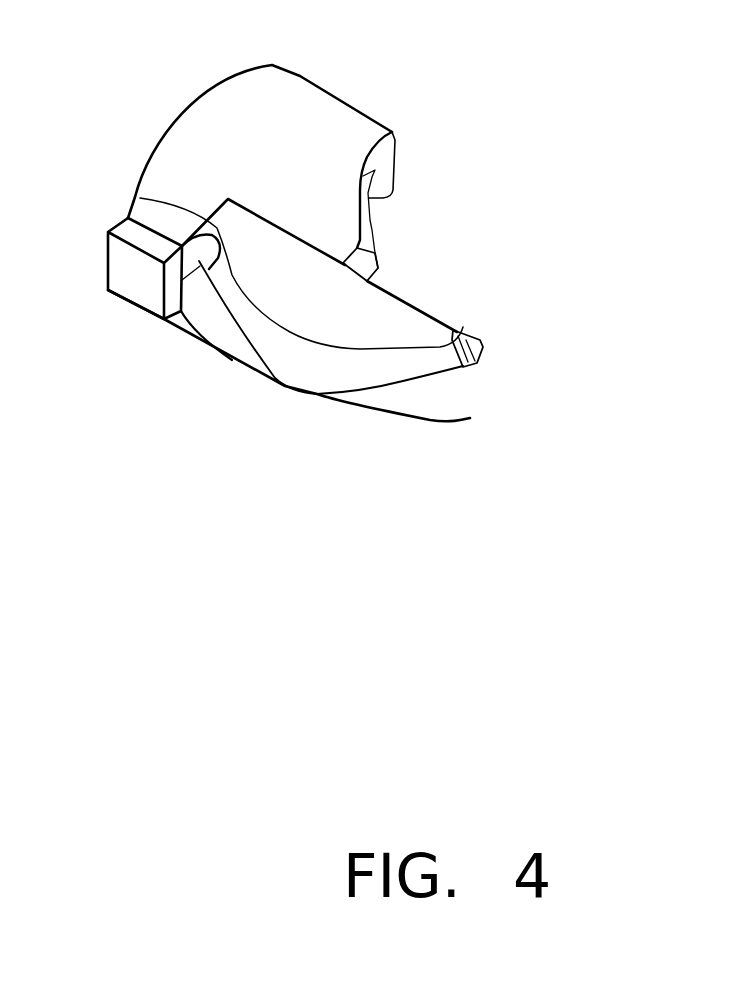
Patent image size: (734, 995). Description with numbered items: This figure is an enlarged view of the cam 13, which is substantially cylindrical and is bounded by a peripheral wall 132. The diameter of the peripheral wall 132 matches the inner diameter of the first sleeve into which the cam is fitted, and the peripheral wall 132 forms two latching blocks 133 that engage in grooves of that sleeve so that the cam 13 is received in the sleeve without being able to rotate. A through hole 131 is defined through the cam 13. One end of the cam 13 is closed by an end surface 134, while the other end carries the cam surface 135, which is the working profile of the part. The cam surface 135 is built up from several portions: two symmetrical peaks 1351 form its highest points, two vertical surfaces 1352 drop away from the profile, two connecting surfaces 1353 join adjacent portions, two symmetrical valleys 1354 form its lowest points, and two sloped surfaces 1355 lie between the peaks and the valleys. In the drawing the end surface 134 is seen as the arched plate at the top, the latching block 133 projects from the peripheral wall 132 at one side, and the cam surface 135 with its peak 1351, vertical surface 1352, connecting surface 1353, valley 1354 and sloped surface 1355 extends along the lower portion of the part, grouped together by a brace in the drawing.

The cam 13 is at (359, 80).
The through hole 131 is at (152, 197).
The peripheral wall 132 is at (253, 137).
The latching block 133 is at (140, 283).
The end surface 134 is at (185, 108).
The cam surface 135 is at (597, 173).
The peak 1351 is at (468, 364).
The vertical surface 1352 is at (298, 241).
The connecting surface 1353 is at (474, 328).
The valley 1354 is at (462, 418).
The sloped surface 1355 is at (350, 375).